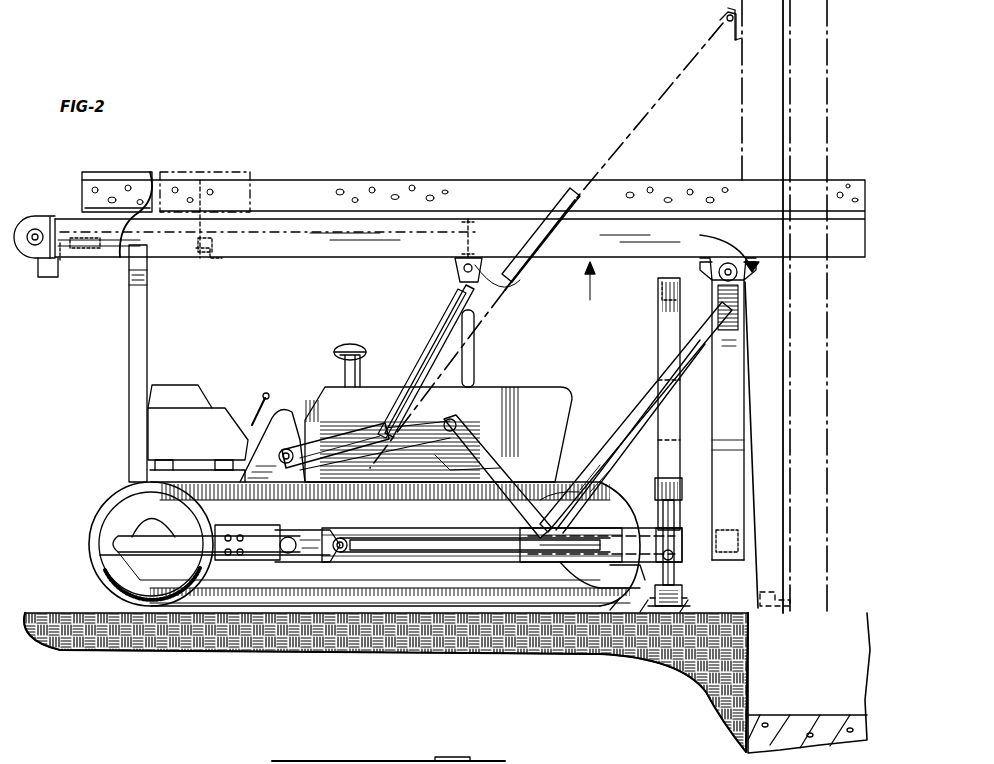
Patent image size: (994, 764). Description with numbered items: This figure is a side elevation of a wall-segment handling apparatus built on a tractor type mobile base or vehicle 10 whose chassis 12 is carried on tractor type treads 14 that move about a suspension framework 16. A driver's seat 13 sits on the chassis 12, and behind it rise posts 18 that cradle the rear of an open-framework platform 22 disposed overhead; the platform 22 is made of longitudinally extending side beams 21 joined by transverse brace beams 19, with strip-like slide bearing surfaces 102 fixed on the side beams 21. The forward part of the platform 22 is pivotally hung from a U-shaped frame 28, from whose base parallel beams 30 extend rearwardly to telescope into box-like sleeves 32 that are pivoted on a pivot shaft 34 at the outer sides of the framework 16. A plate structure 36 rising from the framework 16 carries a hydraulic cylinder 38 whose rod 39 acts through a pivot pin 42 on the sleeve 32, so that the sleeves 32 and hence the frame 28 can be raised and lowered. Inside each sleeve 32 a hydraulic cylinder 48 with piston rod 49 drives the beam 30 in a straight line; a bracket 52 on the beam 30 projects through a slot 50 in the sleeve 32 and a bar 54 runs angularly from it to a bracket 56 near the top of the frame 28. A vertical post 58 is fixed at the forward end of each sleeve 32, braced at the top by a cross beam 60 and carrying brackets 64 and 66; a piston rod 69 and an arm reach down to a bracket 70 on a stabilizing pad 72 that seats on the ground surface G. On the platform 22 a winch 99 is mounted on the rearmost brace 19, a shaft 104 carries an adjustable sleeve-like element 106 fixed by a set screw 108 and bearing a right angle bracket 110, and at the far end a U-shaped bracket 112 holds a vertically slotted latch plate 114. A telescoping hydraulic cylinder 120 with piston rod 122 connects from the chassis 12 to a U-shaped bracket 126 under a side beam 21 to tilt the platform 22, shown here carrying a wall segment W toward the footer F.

The tractor type mobile base or vehicle 10 is at (222, 382).
The chassis 12 is at (512, 387).
The driver's seat 13 is at (200, 443).
The tractor type treads 14 is at (90, 525).
The framework 16 is at (170, 575).
The posts 18 is at (128, 357).
The brace beams 19 is at (452, 236).
The side beams 21 is at (341, 258).
The platform 22 is at (855, 282).
The U-shaped frame 28 is at (740, 440).
The beams 30 is at (606, 540).
The box-like sleeve 32 is at (305, 555).
The pivot shaft 34 is at (272, 557).
The plate structure 36 is at (290, 490).
The hydraulic cylinder 38 is at (345, 434).
The rod 39 is at (420, 444).
The pivot pin 42 is at (458, 420).
The hydraulic cylinders 48 is at (398, 562).
The piston rod 49 is at (488, 550).
The slot 50 is at (635, 562).
The bracket 52 is at (540, 512).
The bar 54 is at (620, 435).
The bracket 56 is at (738, 318).
The vertical post 58 is at (658, 358).
The cross beam 60 is at (660, 298).
The bracket 64 is at (685, 485).
The bracket 66 is at (682, 540).
The piston rod 69 is at (676, 510).
The bracket 70 is at (682, 588).
The stabilizing pad 72 is at (620, 590).
The winch 99 is at (32, 216).
The slide bearing surfaces 102 is at (312, 200).
The shaft 104 is at (168, 257).
The sleeve-like element 106 is at (76, 195).
The set screw 108 is at (85, 262).
The right angle bracket 110 is at (145, 170).
The U-shaped bracket 112 is at (418, 760).
The latch plate 114 is at (760, 596).
The hydraulic cylinder 120 is at (440, 318).
The piston rod 122 is at (625, 135).
The U-shaped bracket 126 is at (505, 280).
The wall W is at (828, 120).
The ground surface G is at (60, 612).
The footer F is at (852, 705).